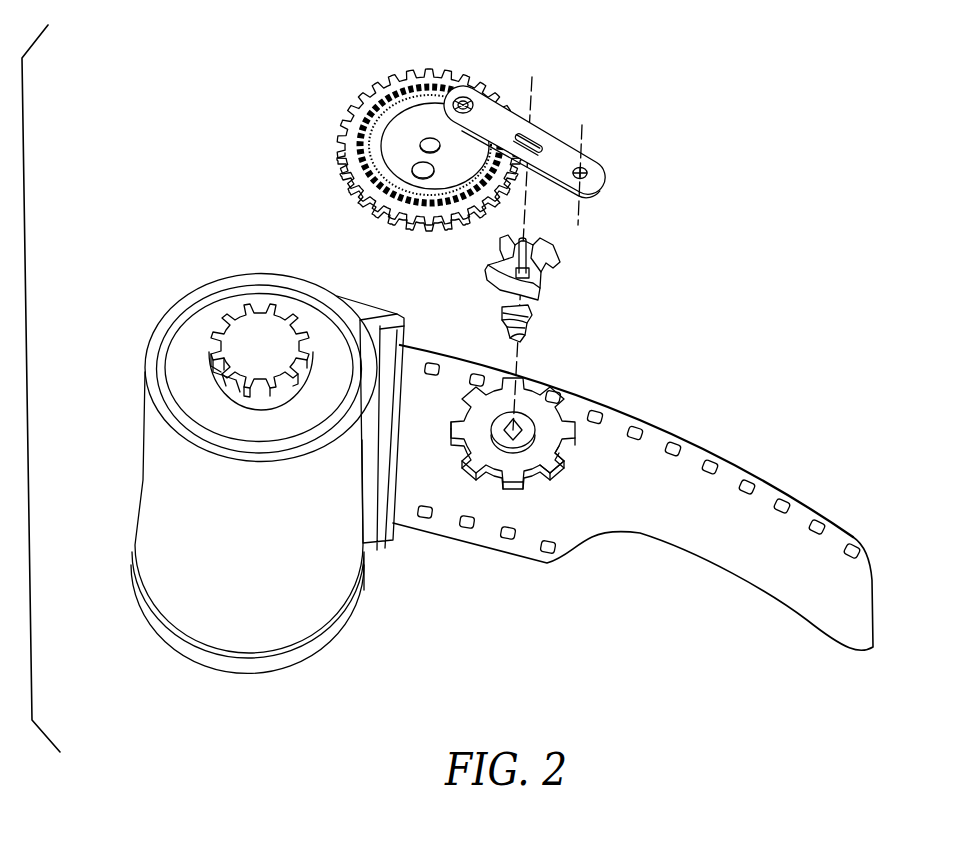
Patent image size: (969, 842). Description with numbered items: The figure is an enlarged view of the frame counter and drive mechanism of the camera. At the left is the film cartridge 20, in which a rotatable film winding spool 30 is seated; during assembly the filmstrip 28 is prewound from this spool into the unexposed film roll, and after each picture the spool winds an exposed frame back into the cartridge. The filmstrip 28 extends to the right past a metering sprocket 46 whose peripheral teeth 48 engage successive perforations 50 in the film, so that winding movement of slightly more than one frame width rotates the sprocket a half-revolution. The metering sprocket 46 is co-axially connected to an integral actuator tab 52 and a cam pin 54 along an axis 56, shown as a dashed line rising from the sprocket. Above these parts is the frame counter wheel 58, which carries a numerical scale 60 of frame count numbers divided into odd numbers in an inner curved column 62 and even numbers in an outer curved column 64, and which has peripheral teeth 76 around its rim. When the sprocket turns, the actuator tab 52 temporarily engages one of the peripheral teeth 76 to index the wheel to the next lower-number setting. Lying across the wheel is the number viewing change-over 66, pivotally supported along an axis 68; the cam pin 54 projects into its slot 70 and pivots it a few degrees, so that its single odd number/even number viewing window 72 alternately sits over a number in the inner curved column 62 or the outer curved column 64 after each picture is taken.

The film cartridge 20 is at (128, 444).
The filmstrip 28 is at (487, 533).
The film winding spool 30 is at (216, 388).
The metering sprocket 46 is at (548, 485).
The peripheral teeth 48 is at (560, 446).
The perforations 50 is at (712, 455).
The actuator tab 52 is at (534, 281).
The cam pin 54 is at (552, 242).
The axis 56 is at (518, 210).
The frame counter wheel 58 is at (318, 137).
The numerical scale 60 is at (366, 122).
The inner curved column 62 is at (422, 117).
The outer curved column 64 is at (378, 90).
The number viewing change-over 66 is at (614, 161).
The axis 68 is at (580, 214).
The slot 70 is at (542, 140).
The odd number/even number viewing window 72 is at (466, 98).
The peripheral teeth 76 is at (380, 198).